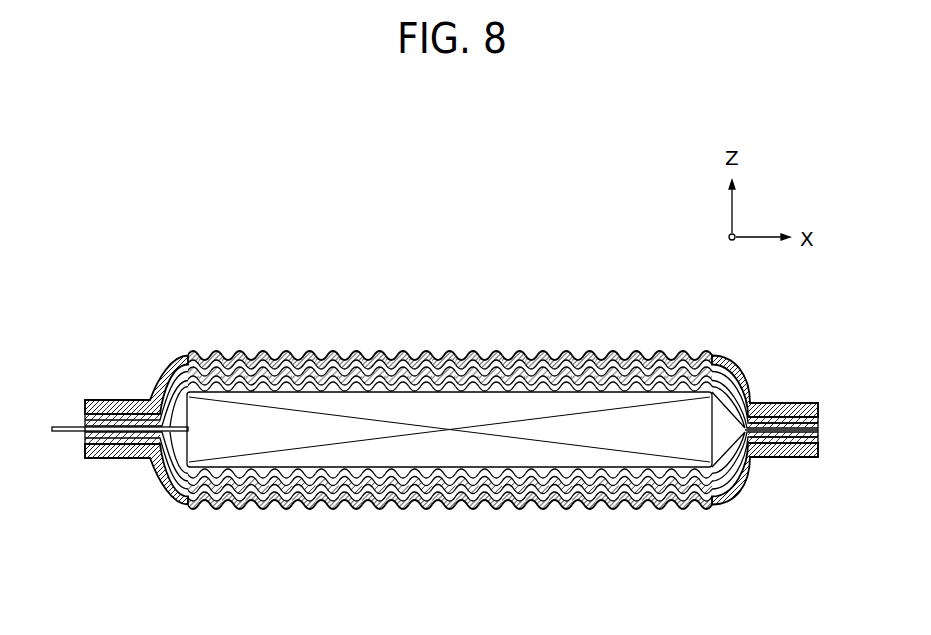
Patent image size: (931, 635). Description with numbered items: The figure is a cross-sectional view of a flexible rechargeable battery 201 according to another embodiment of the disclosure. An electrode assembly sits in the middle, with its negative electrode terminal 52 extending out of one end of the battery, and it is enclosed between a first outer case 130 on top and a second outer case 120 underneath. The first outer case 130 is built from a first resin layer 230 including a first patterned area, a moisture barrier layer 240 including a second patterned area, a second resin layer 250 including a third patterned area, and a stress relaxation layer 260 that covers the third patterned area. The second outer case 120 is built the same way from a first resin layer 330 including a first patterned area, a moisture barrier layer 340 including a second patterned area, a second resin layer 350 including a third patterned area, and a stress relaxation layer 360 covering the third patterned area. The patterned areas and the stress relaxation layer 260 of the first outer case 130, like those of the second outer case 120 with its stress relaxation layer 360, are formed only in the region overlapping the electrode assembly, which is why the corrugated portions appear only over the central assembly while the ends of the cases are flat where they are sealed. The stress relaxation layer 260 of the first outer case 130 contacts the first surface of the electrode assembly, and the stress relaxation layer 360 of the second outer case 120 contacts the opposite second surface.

The flexible rechargeable battery 201 is at (476, 164).
The negative electrode terminal 52 is at (72, 433).
The second outer case 120 is at (780, 540).
The first outer case 130 is at (778, 348).
The first resin layer 230 is at (197, 353).
The moisture barrier layer 240 is at (173, 364).
The second resin layer 250 is at (163, 374).
The stress relaxation layer 260 is at (642, 352).
The first resin layer 330 is at (767, 446).
The moisture barrier layer 340 is at (797, 452).
The second resin layer 350 is at (812, 460).
The stress relaxation layer 360 is at (452, 512).